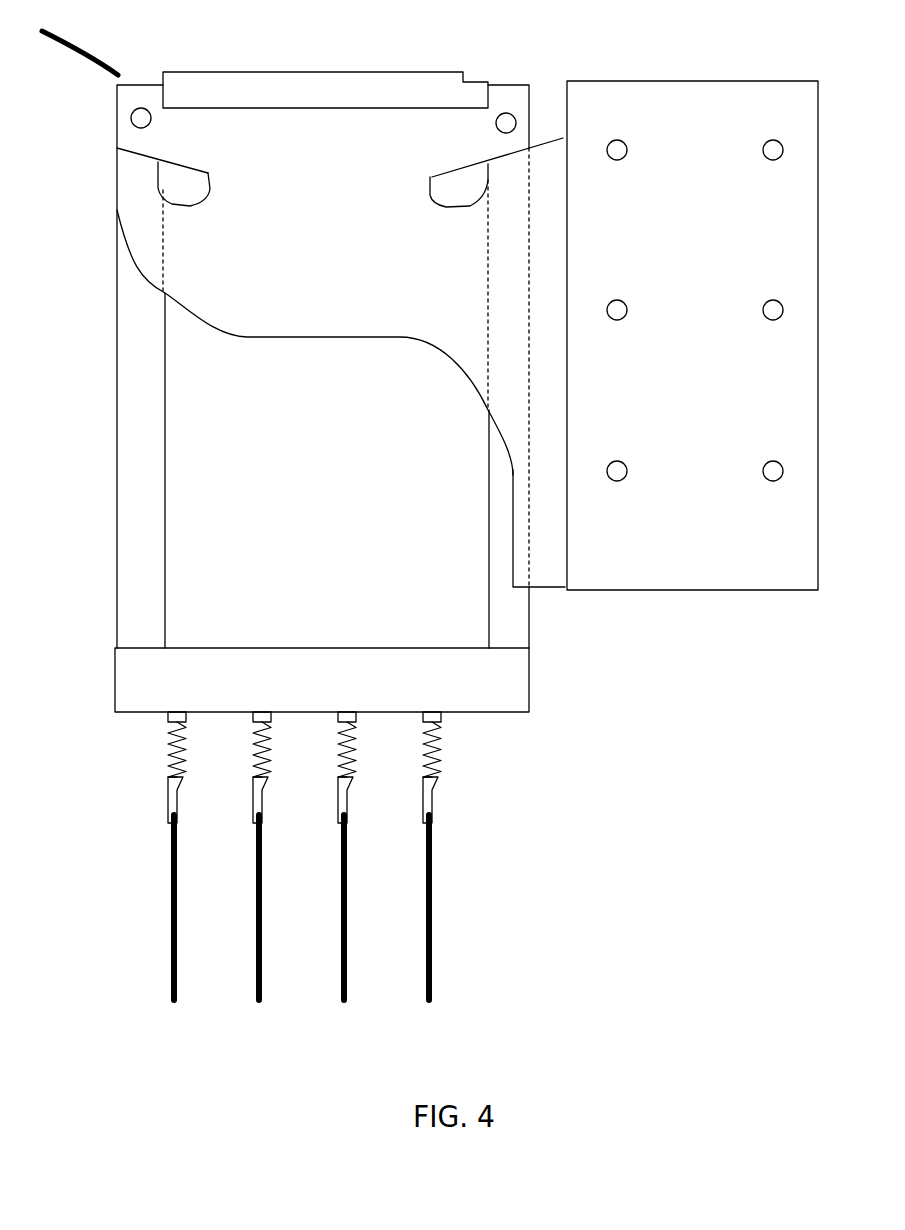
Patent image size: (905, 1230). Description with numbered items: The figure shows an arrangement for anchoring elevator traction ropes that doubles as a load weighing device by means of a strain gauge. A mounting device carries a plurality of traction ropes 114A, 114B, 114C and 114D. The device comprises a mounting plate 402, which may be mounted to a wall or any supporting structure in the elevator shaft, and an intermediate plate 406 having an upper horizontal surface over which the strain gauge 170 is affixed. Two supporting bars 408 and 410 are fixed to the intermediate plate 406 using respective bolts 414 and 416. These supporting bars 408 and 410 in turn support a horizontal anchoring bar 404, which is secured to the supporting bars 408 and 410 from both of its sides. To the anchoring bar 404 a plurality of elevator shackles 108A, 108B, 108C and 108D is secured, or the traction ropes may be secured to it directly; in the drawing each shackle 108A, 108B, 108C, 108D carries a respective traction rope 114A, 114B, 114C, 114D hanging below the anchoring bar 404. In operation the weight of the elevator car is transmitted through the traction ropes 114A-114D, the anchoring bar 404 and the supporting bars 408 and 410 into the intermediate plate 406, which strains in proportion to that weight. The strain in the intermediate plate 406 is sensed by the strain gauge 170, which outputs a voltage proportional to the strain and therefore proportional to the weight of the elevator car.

The strain gauge 170 is at (443, 72).
The mounting plate 402 is at (680, 81).
The anchoring bar 404 is at (530, 682).
The intermediate plate 406 is at (312, 337).
The supporting bar 408 is at (488, 560).
The supporting bar 410 is at (115, 572).
The bolt 414 is at (515, 118).
The bolt 416 is at (140, 107).
The elevator shackle 108A is at (183, 777).
The elevator shackle 108B is at (268, 777).
The elevator shackle 108C is at (353, 777).
The elevator shackle 108D is at (438, 777).
The traction rope 114A is at (175, 1000).
The traction rope 114B is at (260, 1000).
The traction rope 114C is at (345, 1000).
The traction rope 114D is at (430, 1000).